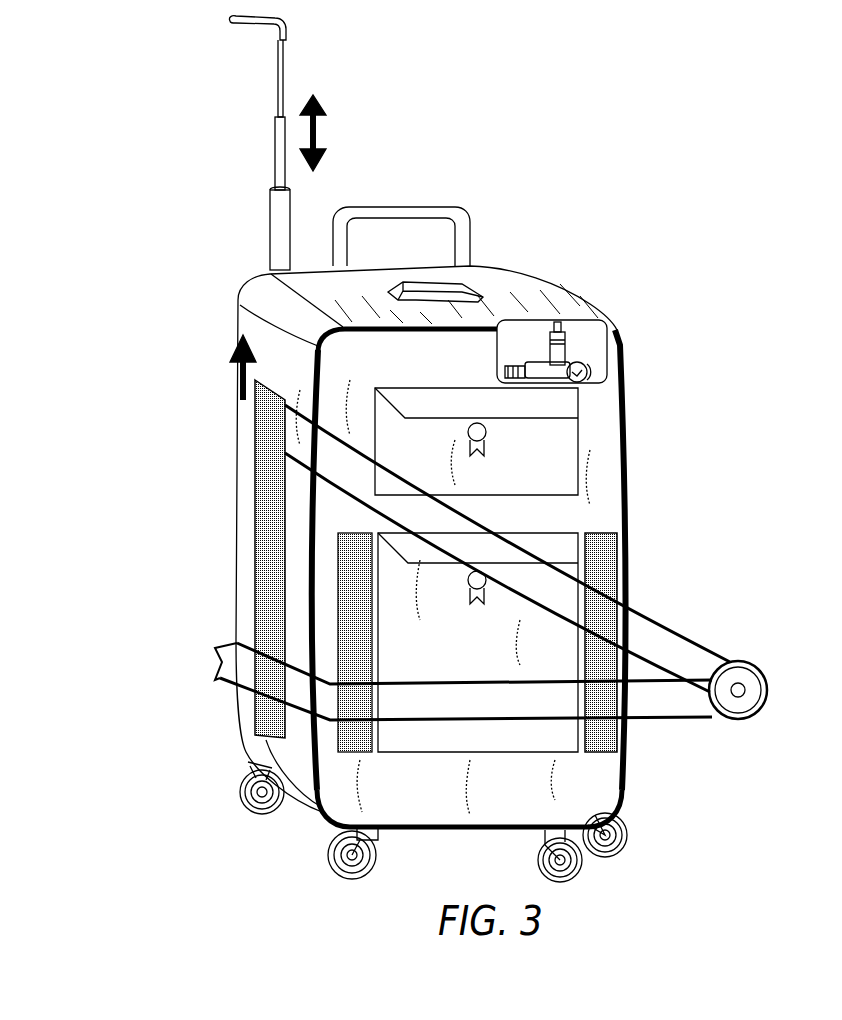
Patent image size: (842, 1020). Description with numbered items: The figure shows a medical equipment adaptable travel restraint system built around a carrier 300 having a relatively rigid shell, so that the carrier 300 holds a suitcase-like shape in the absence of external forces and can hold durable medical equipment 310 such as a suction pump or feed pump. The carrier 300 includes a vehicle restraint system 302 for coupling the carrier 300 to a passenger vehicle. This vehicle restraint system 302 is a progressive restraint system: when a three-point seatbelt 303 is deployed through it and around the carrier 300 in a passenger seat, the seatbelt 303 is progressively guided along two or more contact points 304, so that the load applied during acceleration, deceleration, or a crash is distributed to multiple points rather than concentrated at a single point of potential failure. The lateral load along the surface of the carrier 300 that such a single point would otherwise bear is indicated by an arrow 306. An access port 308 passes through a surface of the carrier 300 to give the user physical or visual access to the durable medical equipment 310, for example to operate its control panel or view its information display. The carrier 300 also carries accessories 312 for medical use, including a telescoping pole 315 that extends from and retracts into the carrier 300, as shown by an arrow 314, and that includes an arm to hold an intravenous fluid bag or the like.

The carrier 300 is at (710, 190).
The vehicle restraint system 302 is at (265, 566).
The seatbelt 303 is at (678, 650).
The contact points 304 is at (253, 428).
The arrow 306 is at (238, 370).
The access port 308 is at (598, 331).
The durable medical equipment 310 is at (537, 366).
The accessories 312 is at (250, 24).
The arrow 314 is at (318, 133).
The telescoping pole 315 is at (275, 197).